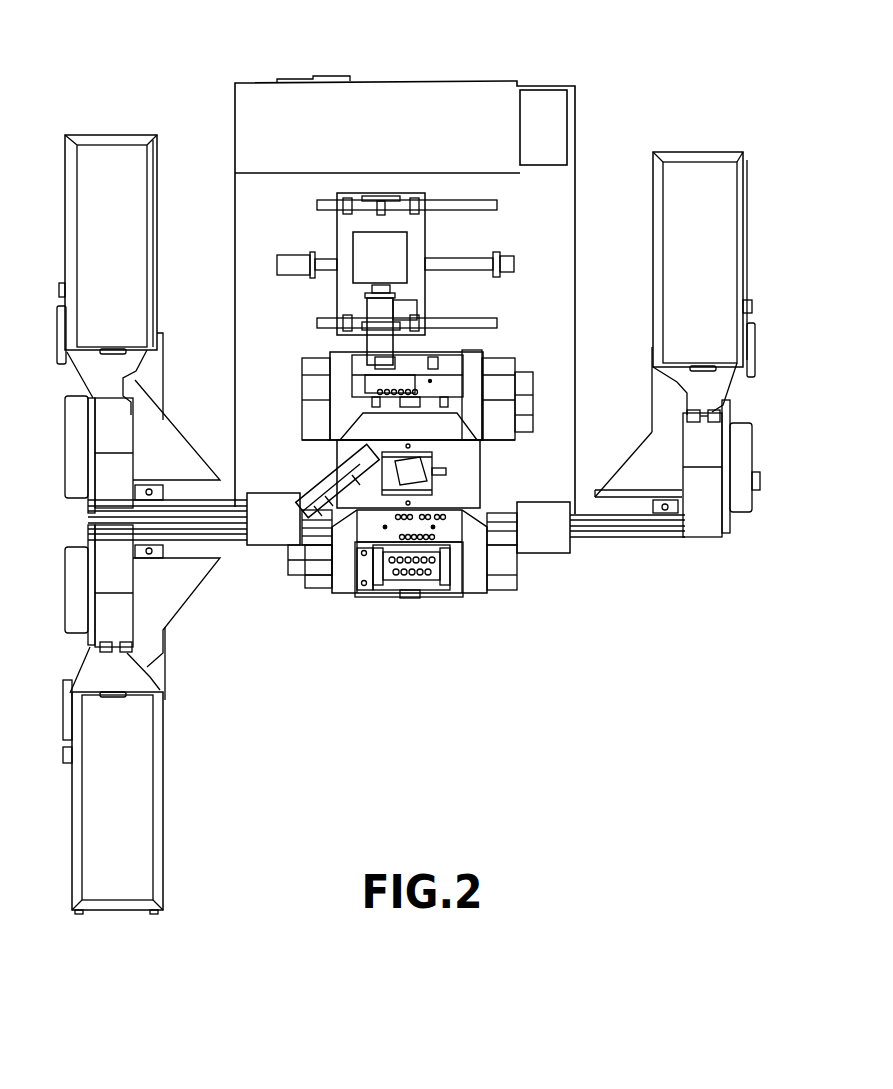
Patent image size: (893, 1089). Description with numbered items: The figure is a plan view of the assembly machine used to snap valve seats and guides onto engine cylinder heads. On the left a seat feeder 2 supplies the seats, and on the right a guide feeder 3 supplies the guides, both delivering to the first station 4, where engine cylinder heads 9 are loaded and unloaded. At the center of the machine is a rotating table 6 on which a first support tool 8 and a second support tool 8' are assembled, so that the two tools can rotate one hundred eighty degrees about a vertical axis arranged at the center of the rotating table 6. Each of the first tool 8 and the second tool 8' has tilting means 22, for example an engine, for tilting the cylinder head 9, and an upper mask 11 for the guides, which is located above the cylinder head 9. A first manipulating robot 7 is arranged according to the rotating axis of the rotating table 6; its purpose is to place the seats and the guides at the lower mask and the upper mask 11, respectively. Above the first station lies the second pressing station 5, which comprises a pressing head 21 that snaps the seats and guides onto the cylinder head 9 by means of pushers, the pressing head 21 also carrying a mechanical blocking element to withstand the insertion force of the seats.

The seat feeder 2 is at (127, 753).
The guide feeder 3 is at (694, 200).
The first station 4 is at (432, 598).
The second pressing station 5 is at (407, 429).
The rotating table 6 is at (482, 548).
The first manipulating robot 7 is at (330, 462).
The first support tool 8 is at (380, 614).
The second support tool 8' is at (463, 331).
The engine cylinder head 9 is at (390, 577).
The upper mask 11 is at (458, 352).
The pressing head 21 is at (382, 285).
The tilting means 22 is at (535, 373).